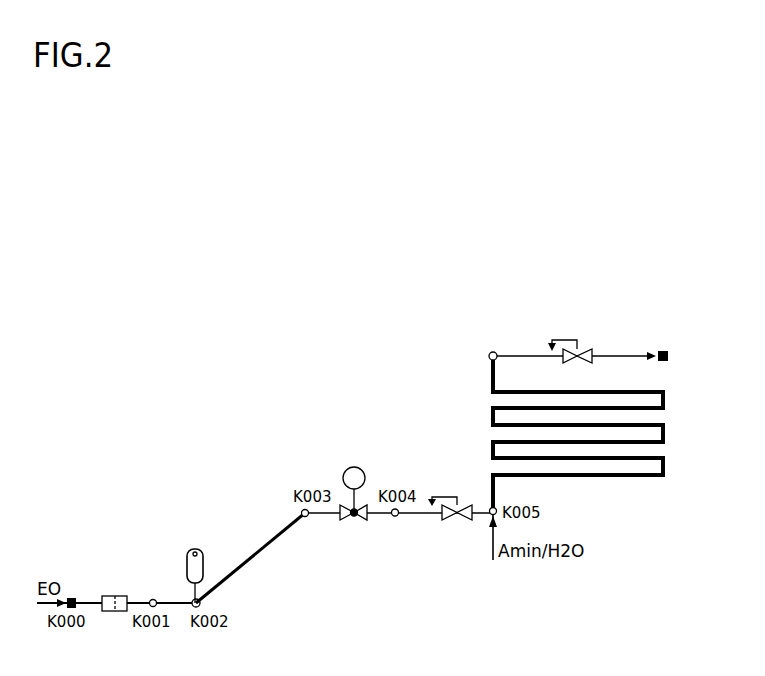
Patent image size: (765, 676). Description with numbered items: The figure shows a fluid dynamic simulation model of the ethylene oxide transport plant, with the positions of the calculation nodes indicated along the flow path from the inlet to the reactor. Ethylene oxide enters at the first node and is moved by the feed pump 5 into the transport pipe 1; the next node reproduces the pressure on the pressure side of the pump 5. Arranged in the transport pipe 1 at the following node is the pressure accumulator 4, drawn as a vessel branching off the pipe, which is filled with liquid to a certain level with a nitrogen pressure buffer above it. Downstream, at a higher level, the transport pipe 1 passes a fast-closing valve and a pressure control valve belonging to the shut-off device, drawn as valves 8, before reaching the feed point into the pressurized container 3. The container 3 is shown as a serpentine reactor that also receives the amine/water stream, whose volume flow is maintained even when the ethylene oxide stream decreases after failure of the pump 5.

The transport pipe 1 is at (142, 603).
The container 3 is at (485, 446).
The pressure accumulator 4 is at (195, 549).
The pump 5 is at (107, 596).
The valve 8 is at (343, 509).